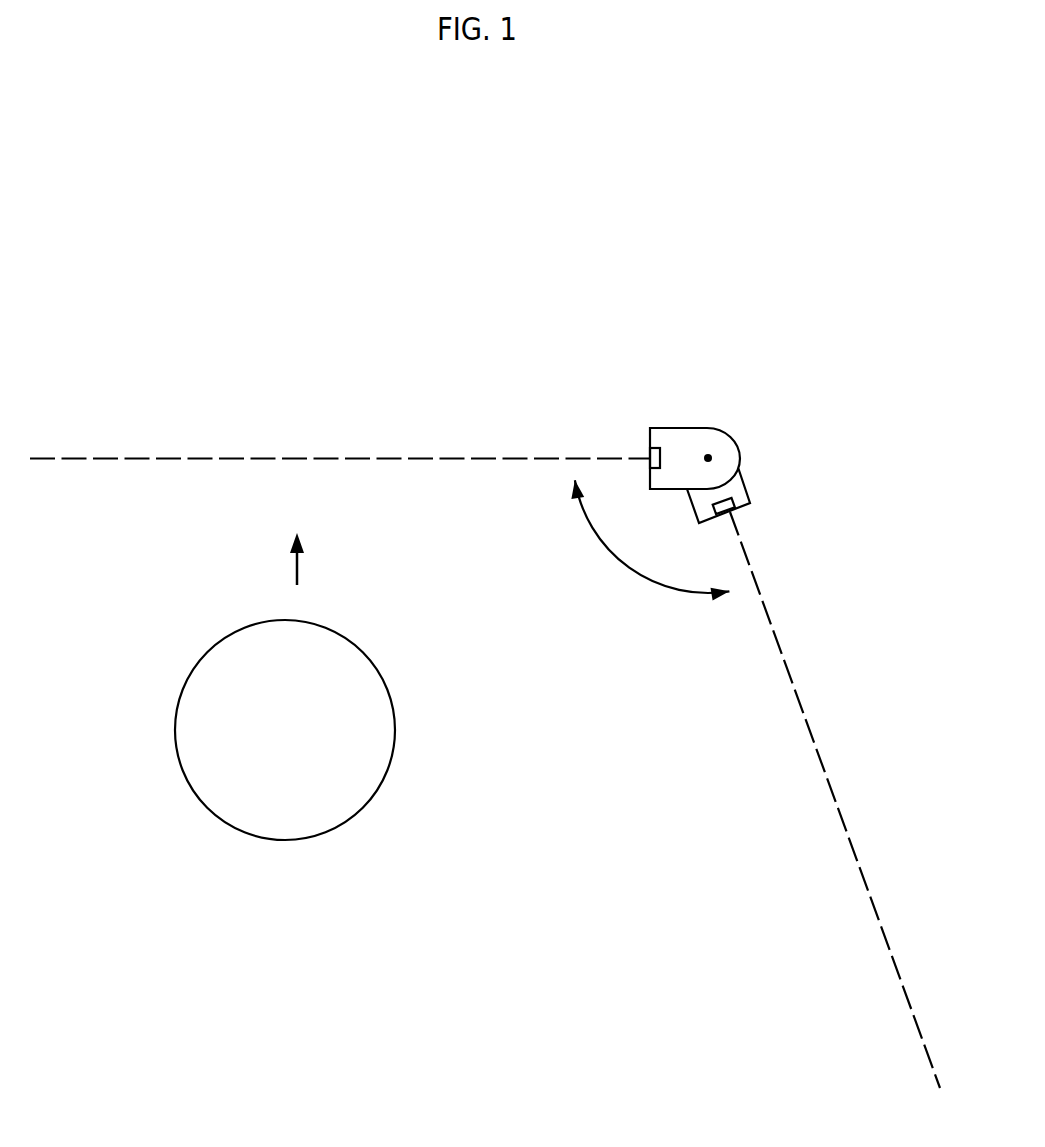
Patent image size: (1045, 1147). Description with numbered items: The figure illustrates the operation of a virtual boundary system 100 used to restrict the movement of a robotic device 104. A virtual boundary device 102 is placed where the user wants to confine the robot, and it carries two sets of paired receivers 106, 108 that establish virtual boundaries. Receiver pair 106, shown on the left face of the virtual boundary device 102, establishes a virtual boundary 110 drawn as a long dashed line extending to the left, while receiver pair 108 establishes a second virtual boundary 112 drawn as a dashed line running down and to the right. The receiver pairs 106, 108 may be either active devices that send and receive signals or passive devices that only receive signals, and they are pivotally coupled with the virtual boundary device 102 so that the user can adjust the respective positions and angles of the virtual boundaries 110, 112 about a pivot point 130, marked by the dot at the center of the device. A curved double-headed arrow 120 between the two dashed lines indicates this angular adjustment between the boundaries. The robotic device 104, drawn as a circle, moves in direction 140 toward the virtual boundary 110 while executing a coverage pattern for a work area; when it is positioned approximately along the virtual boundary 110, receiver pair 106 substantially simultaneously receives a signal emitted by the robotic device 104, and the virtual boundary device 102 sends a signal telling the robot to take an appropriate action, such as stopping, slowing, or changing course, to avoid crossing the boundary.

The virtual boundary system 100 is at (862, 257).
The virtual boundary device 102 is at (677, 427).
The robotic device 104 is at (180, 757).
The receiver pair 106 is at (648, 455).
The receiver pair 108 is at (731, 512).
The virtual boundary 110 is at (368, 458).
The virtual boundary 112 is at (800, 711).
The rotation angle 120 is at (618, 567).
The pivot point 130 is at (713, 455).
The direction 140 is at (293, 562).